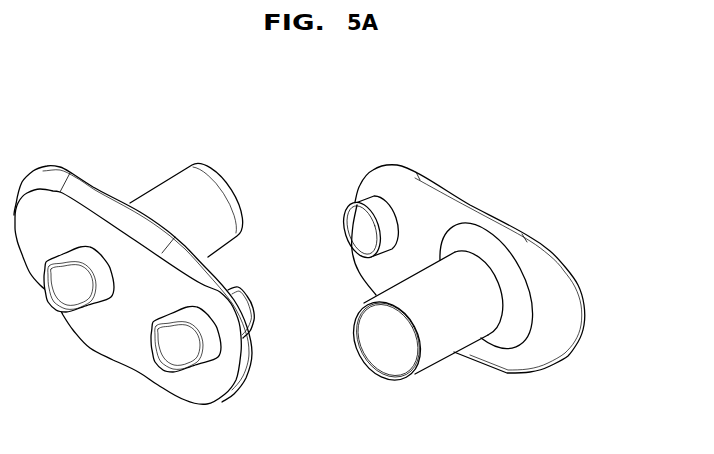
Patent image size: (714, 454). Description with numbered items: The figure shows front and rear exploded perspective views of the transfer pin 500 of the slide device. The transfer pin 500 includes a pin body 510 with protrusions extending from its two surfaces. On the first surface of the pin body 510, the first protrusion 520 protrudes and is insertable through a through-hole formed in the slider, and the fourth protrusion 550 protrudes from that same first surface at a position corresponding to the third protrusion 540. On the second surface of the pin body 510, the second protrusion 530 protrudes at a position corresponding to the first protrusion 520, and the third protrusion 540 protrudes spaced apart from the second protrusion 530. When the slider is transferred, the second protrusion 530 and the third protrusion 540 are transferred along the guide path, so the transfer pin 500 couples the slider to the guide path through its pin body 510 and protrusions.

The transfer pin 500 is at (153, 133).
The pin body 510 is at (547, 300).
The first protrusion 520 is at (213, 193).
The second protrusion 530 is at (65, 286).
The third protrusion 540 is at (172, 348).
The fourth protrusion 550 is at (357, 237).